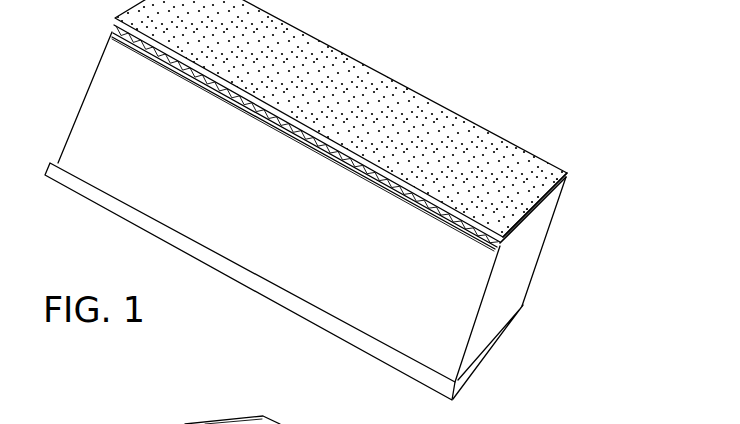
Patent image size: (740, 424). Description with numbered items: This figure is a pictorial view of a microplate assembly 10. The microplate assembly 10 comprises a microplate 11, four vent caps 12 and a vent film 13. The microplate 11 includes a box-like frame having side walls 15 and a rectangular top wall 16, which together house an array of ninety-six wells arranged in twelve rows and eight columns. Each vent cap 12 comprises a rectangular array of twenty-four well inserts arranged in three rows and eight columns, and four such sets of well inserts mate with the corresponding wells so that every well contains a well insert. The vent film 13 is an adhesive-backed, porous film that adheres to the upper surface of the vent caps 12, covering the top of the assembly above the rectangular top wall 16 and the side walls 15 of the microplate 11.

The microplate assembly 10 is at (551, 65).
The microplate 11 is at (527, 270).
The vent cap 12 is at (477, 230).
The vent film 13 is at (513, 157).
The side walls 15 is at (493, 300).
The top wall 16 is at (118, 31).